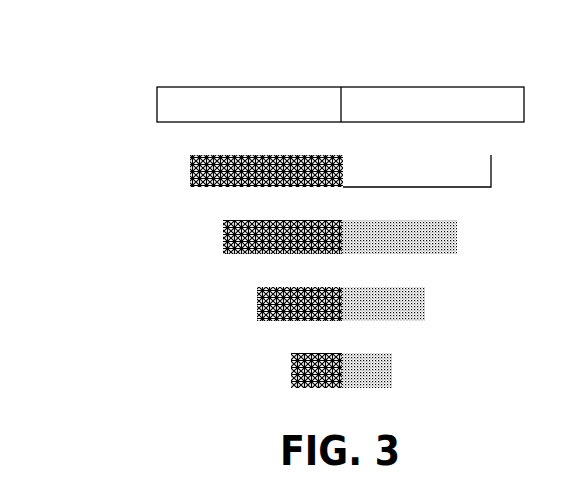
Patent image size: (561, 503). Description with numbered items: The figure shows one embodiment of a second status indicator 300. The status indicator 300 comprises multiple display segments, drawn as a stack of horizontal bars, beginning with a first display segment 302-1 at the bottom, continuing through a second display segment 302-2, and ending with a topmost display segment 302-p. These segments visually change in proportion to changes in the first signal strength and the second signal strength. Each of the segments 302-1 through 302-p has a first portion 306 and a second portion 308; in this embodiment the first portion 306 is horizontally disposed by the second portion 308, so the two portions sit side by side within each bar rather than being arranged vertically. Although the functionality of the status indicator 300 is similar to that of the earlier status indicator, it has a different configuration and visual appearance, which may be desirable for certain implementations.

The status indicator 300 is at (198, 40).
The display segment 302-p is at (147, 105).
The display segment 302-2 is at (247, 304).
The display segment 302-1 is at (341, 368).
The first portion 306 is at (323, 353).
The second portion 308 is at (403, 370).